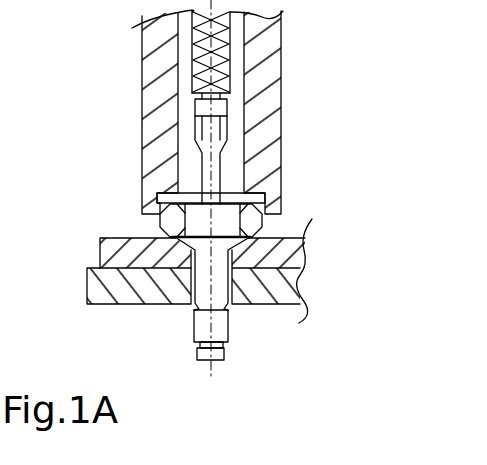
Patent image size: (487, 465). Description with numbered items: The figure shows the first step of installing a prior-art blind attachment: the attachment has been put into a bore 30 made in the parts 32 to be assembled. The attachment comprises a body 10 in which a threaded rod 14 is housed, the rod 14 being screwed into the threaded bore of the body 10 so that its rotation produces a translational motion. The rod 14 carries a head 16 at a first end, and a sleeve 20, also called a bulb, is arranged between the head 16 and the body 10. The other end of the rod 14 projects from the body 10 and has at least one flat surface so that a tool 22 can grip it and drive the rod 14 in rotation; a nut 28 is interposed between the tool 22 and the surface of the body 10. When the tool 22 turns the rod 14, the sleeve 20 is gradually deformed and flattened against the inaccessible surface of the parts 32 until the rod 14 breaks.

The body 10 is at (193, 267).
The rod 14 is at (213, 167).
The head 16 is at (195, 353).
The sleeve 20 is at (222, 329).
The tool 22 is at (272, 72).
The nut 28 is at (278, 218).
The bore 30 is at (217, 288).
The parts 32 is at (72, 239).